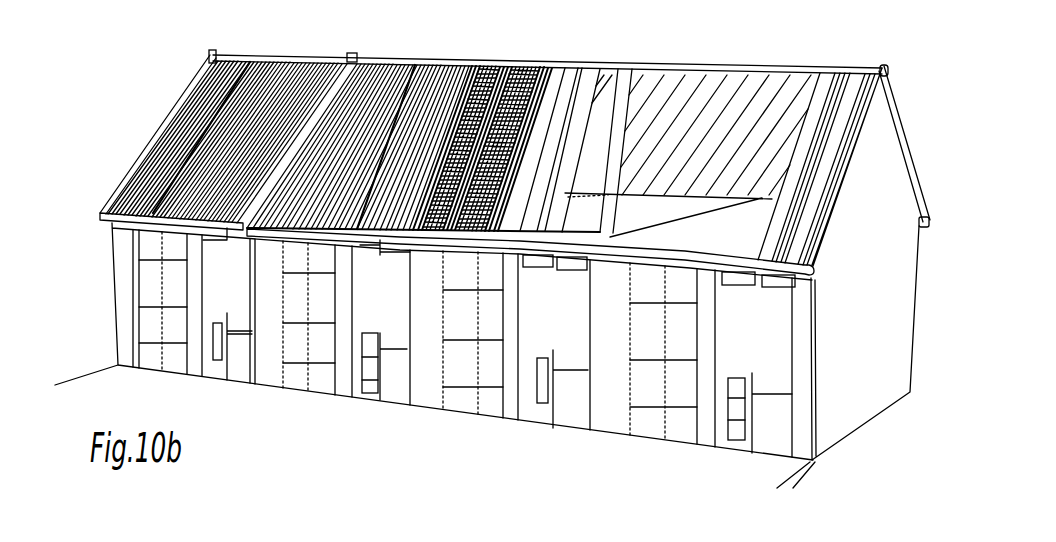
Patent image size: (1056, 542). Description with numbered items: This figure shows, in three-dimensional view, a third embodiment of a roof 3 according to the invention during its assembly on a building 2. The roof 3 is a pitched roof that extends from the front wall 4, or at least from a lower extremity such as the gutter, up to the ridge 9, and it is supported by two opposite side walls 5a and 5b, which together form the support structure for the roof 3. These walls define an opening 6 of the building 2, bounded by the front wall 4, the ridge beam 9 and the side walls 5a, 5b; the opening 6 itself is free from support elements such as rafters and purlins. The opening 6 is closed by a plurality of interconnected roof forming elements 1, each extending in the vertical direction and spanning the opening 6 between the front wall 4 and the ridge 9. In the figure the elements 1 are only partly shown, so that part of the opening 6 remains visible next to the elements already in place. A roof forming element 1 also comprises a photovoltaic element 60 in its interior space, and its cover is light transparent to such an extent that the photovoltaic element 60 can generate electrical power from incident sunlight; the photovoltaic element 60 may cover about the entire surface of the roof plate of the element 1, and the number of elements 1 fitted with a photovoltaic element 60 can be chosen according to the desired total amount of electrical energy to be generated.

The roof forming element 1 is at (372, 75).
The building 2 is at (959, 106).
The roof 3 is at (858, 45).
The front wall 4 is at (751, 336).
The side wall 5a is at (704, 197).
The side wall 5b is at (898, 192).
The opening 6 is at (754, 97).
The ridge beam 9 is at (710, 67).
The photovoltaic element 60 is at (538, 67).